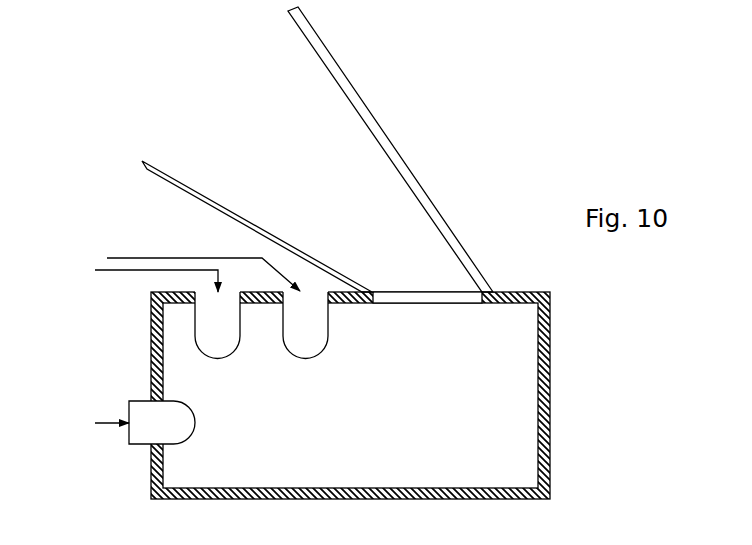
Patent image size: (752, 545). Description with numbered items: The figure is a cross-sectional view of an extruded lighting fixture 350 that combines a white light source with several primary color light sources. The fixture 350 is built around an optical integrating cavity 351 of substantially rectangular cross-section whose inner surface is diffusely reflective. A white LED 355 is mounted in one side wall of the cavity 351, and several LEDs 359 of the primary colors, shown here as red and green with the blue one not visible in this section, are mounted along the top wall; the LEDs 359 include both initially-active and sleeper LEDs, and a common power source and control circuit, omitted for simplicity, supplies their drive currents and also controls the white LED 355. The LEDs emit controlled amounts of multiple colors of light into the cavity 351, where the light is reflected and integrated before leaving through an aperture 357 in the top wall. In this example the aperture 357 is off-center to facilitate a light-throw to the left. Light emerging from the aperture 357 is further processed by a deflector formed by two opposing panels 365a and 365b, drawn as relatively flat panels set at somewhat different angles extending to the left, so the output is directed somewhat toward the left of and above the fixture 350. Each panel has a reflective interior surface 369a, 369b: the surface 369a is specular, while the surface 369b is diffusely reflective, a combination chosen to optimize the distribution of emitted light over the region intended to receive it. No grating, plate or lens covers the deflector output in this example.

The lighting fixture 350 is at (562, 143).
The optical integrating cavity 351 is at (350, 395).
The white LED 355 is at (196, 425).
The aperture 357 is at (420, 307).
The LEDs 359 is at (218, 360).
The panel 365a is at (160, 173).
The panel 365b is at (398, 152).
The reflective interior surface 369a is at (187, 182).
The reflective interior surface 369b is at (327, 75).